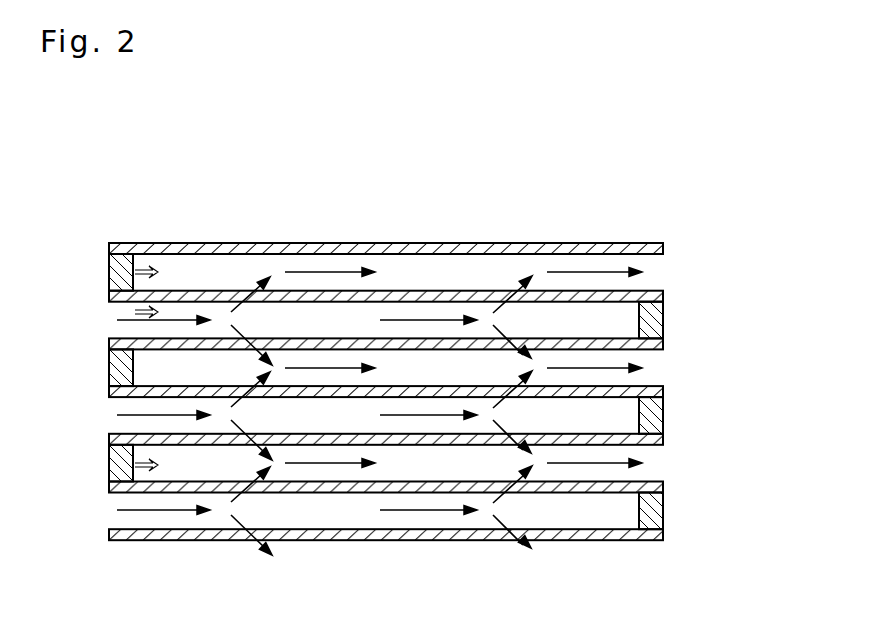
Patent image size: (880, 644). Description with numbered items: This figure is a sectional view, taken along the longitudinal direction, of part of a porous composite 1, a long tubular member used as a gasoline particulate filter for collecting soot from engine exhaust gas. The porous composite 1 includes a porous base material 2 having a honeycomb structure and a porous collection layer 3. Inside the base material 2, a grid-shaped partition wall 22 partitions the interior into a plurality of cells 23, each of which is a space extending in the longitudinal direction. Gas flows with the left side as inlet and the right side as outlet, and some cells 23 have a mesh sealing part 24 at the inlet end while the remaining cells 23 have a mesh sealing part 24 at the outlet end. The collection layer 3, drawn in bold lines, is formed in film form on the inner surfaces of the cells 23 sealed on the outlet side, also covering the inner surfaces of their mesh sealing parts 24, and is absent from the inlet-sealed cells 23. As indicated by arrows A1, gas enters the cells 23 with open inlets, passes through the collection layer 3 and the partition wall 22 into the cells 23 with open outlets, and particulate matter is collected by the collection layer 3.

The porous composite 1 is at (92, 184).
The base material 2 is at (527, 188).
The partition wall 22 is at (445, 247).
The cells 23 is at (134, 272).
The mesh sealing part 24 is at (116, 373).
The collection layer 3 is at (118, 338).
The arrows A1 is at (249, 290).